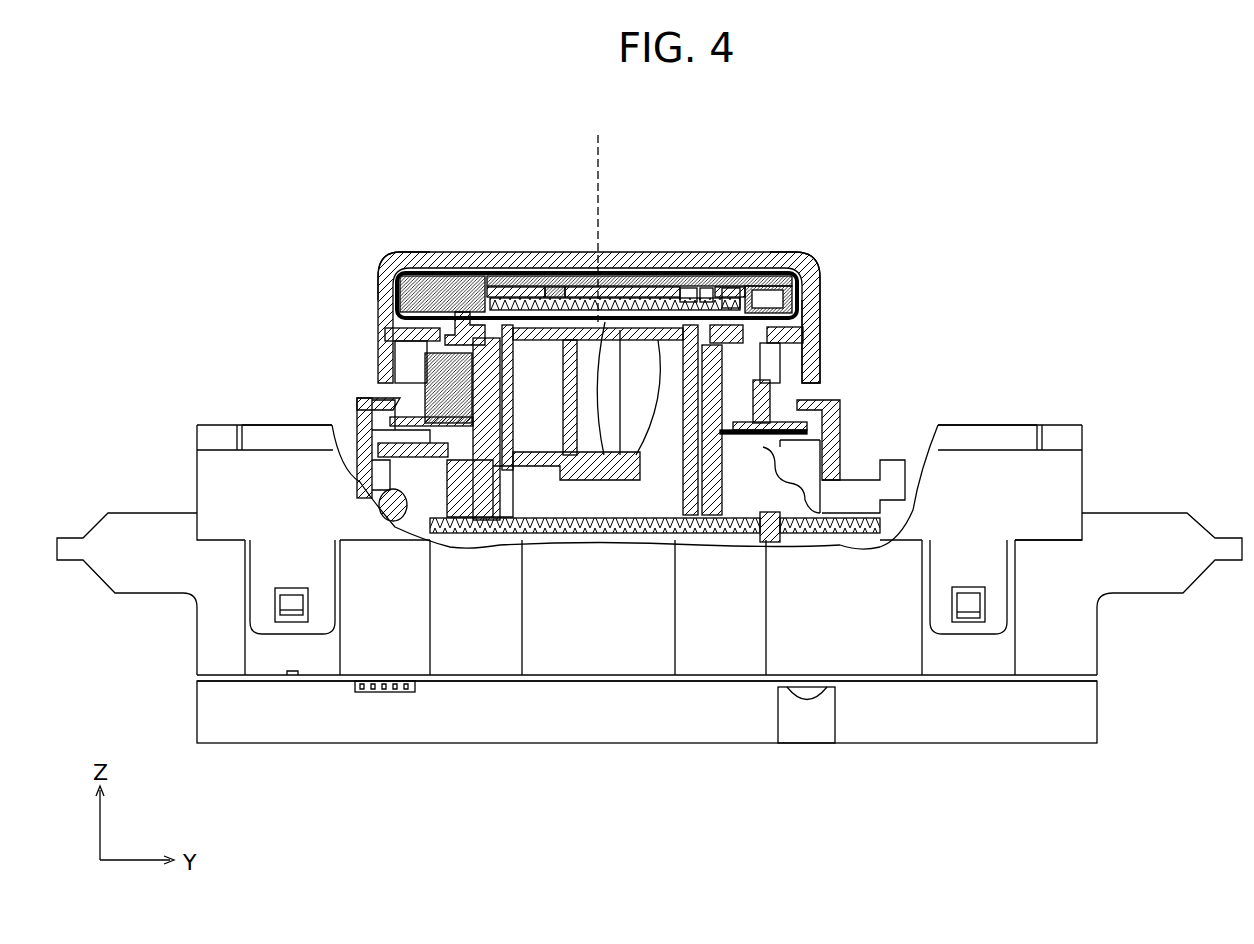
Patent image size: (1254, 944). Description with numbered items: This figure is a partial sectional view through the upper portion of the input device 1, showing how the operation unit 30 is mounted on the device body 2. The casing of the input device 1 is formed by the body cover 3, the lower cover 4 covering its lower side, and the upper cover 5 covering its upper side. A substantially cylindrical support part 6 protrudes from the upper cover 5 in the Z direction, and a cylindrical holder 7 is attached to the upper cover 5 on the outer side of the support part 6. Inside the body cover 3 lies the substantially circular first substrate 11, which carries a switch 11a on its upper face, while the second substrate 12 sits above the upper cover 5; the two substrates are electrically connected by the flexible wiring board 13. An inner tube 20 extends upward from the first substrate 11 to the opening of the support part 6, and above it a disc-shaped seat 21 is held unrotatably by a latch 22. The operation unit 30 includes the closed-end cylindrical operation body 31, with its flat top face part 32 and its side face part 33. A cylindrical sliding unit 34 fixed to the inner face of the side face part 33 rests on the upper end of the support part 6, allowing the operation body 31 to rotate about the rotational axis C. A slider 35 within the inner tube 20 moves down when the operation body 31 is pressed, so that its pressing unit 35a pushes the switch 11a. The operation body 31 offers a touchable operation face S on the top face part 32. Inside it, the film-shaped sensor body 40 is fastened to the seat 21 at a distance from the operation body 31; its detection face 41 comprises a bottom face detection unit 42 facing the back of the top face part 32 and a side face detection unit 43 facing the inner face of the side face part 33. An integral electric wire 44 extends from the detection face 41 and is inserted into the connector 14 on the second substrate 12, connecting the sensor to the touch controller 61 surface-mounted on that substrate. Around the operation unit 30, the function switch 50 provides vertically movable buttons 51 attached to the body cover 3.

The input device 1 is at (700, 165).
The device body 2 is at (1078, 416).
The body cover 3 is at (197, 640).
The lower cover 4 is at (197, 712).
The upper cover 5 is at (197, 440).
The support part 6 is at (440, 375).
The holder 7 is at (357, 407).
The first substrate 11 is at (858, 512).
The switch 11a is at (596, 532).
The second substrate 12 is at (700, 325).
The flexible wiring board 13 is at (636, 400).
The connector 14 is at (632, 392).
The inner tube 20 is at (483, 380).
The seat 21 is at (416, 250).
The latch 22 is at (452, 330).
The operation unit 30 is at (533, 236).
The operation body 31 is at (797, 262).
The top face part 32 is at (612, 303).
The side face part 33 is at (819, 308).
The sliding unit 34 is at (405, 333).
The slider 35 is at (540, 452).
The pressing unit 35a is at (575, 482).
The sensor body 40 is at (565, 290).
The detection face 41 is at (612, 214).
The bottom face detection unit 42 is at (500, 268).
The side face detection unit 43 is at (395, 282).
The electric wire 44 is at (805, 350).
The function switch 50 is at (980, 420).
The buttons 51 is at (262, 425).
The touch controller 61 is at (556, 292).
The rotational axis C is at (598, 150).
The operation face S is at (648, 290).